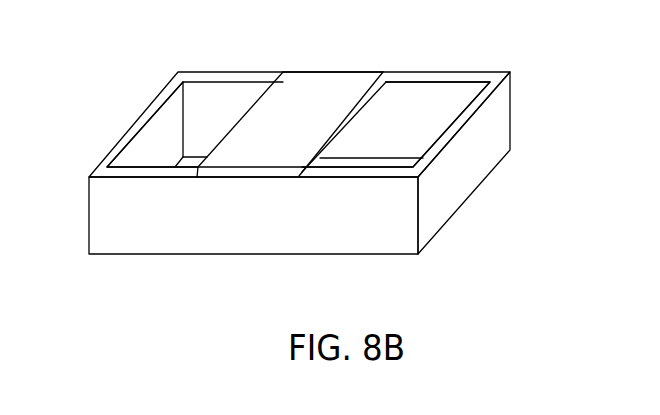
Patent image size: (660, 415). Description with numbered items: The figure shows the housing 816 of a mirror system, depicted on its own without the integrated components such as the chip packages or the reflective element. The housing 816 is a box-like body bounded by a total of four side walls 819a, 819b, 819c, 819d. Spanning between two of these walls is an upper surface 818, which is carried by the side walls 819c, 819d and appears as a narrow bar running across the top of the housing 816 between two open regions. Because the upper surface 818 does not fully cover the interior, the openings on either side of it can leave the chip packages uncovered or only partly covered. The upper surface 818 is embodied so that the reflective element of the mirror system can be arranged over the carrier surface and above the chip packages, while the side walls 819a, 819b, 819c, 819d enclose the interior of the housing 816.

The housing 816 is at (357, 166).
The upper surface 818 is at (330, 80).
The side wall 819a is at (153, 138).
The side wall 819b is at (493, 130).
The side wall 819c is at (252, 240).
The side wall 819d is at (442, 104).